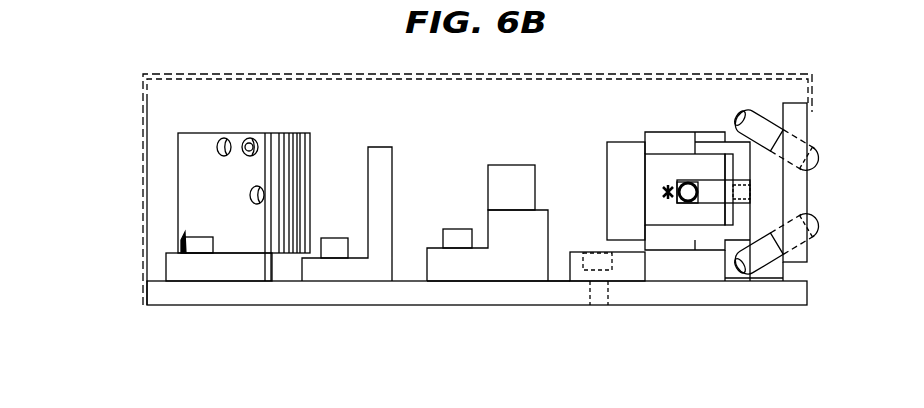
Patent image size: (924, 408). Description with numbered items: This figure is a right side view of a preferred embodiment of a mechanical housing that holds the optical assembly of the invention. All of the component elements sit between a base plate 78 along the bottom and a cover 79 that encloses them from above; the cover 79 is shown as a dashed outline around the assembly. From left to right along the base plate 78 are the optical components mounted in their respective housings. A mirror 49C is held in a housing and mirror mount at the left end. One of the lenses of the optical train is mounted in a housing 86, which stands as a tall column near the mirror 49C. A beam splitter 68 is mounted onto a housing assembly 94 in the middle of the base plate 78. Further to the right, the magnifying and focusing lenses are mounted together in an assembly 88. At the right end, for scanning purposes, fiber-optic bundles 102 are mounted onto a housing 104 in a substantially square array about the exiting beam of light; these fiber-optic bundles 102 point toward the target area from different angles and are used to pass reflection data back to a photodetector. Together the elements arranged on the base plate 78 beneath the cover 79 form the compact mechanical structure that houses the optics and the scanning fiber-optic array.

The cover 79 is at (753, 73).
The base plate 78 is at (792, 305).
The housing assembly 94 is at (535, 281).
The mirror 49C is at (195, 198).
The housing 86 is at (378, 147).
The beam splitter 68 is at (510, 165).
The assembly 88 is at (667, 222).
The housing 104 is at (807, 132).
The fiber-optic bundles 102 is at (822, 173).